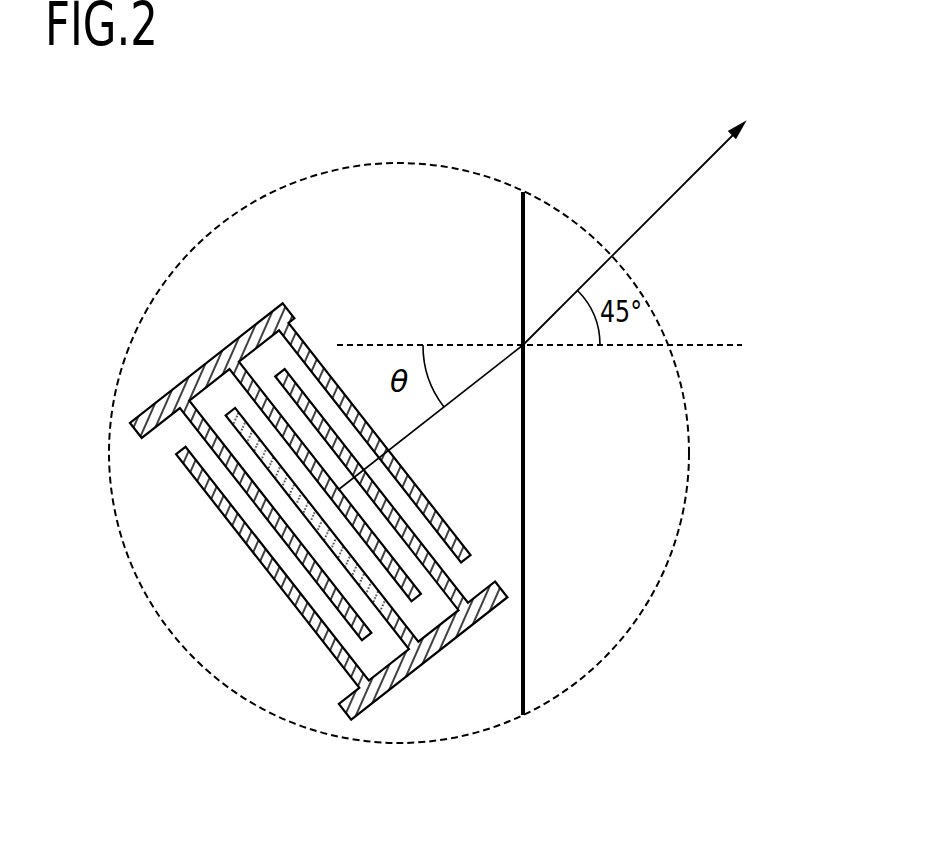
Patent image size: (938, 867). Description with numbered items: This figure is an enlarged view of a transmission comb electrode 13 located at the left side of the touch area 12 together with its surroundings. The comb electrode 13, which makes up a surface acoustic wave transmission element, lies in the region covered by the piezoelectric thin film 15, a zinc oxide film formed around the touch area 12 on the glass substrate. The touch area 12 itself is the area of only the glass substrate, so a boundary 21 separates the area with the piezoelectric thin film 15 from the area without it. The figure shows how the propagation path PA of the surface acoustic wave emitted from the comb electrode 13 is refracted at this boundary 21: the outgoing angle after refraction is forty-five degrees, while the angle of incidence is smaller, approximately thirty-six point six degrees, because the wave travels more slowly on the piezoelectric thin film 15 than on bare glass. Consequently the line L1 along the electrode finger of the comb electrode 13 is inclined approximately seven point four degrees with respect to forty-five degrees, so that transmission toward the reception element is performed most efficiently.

The touch area 12 is at (645, 493).
The comb electrode 13 is at (405, 680).
The piezoelectric thin film 15 is at (450, 227).
The boundary 21 is at (523, 622).
The propagation path PA is at (658, 207).
The line along the electrode finger L1 is at (235, 400).